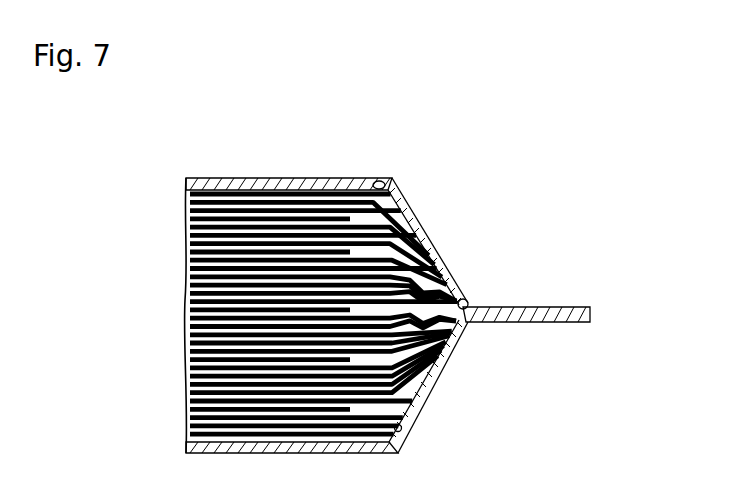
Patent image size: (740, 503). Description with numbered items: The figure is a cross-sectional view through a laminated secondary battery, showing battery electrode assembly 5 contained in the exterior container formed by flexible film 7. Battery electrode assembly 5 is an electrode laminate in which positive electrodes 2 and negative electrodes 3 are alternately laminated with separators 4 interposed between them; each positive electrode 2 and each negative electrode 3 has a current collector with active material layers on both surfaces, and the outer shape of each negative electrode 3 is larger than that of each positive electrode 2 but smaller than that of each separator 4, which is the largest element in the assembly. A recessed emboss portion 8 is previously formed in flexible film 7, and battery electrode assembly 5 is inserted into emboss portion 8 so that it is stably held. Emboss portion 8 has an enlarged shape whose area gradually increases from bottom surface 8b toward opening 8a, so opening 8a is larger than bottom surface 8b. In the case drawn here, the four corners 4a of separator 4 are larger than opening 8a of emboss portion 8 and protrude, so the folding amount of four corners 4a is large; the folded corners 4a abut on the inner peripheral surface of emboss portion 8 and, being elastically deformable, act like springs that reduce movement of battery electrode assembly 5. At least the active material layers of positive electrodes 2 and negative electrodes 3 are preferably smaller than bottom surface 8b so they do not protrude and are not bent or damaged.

The positive electrode 2 is at (280, 270).
The negative electrode 3 is at (228, 247).
The separator 4 is at (300, 257).
The four corners of separator 4a is at (400, 200).
The battery electrode assembly 5 is at (168, 332).
The flexible film 7 is at (313, 185).
The emboss portion 8 is at (481, 272).
The opening 8a is at (466, 304).
The bottom surface 8b is at (378, 186).